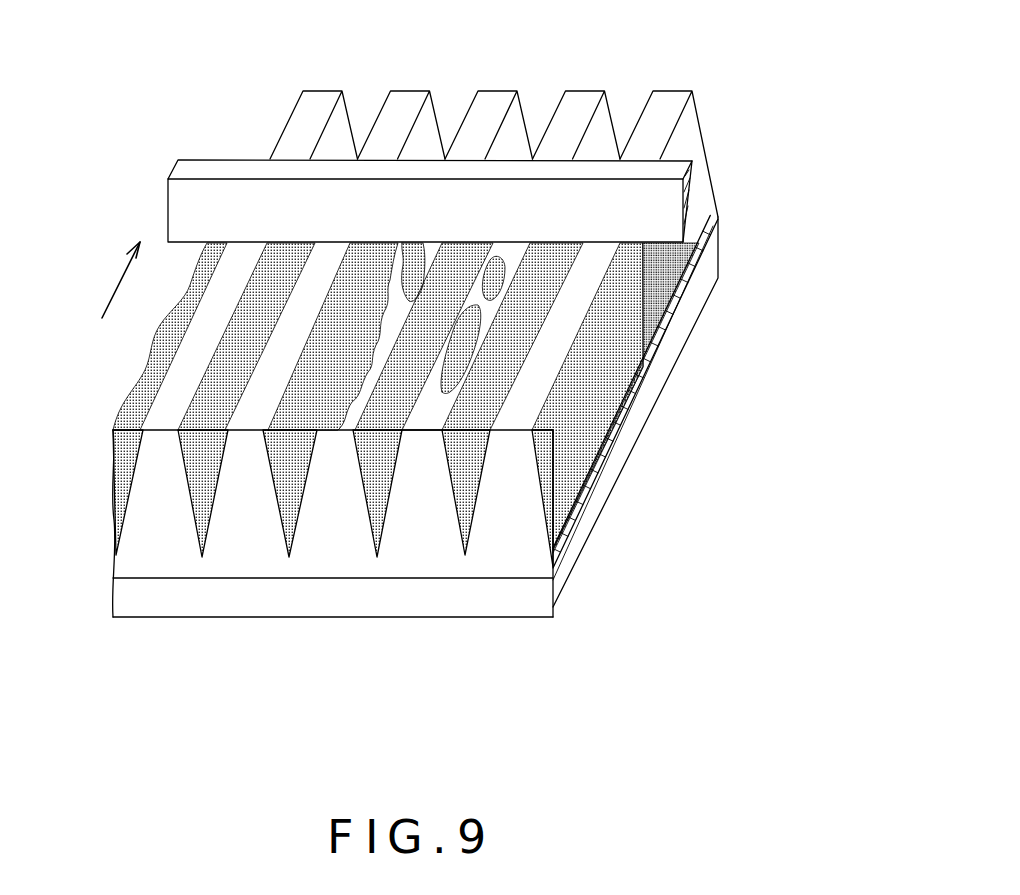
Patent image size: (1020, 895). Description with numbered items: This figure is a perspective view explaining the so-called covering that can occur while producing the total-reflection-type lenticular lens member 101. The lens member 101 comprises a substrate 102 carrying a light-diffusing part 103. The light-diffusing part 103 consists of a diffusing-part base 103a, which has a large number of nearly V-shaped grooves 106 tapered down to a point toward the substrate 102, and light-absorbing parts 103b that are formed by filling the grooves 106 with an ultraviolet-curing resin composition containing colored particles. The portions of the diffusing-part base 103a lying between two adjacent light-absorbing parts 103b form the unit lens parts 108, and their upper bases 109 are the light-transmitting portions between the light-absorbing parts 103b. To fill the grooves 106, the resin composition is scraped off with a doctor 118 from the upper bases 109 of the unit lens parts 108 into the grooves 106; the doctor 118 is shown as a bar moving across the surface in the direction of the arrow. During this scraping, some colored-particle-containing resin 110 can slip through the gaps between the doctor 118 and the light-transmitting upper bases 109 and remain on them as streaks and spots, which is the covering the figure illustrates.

The total-reflection-type lenticular lens member 101 is at (283, 638).
The substrate 102 is at (532, 600).
The light-diffusing part 103 is at (522, 540).
The diffusing-part base 103a is at (223, 561).
The light-absorbing parts 103b is at (467, 505).
The nearly V-shaped grooves 106 is at (535, 103).
The unit lens parts 108 is at (423, 472).
The upper bases 109 is at (415, 433).
The colored-particle-containing resin 110 is at (334, 432).
The doctor 118 is at (212, 167).